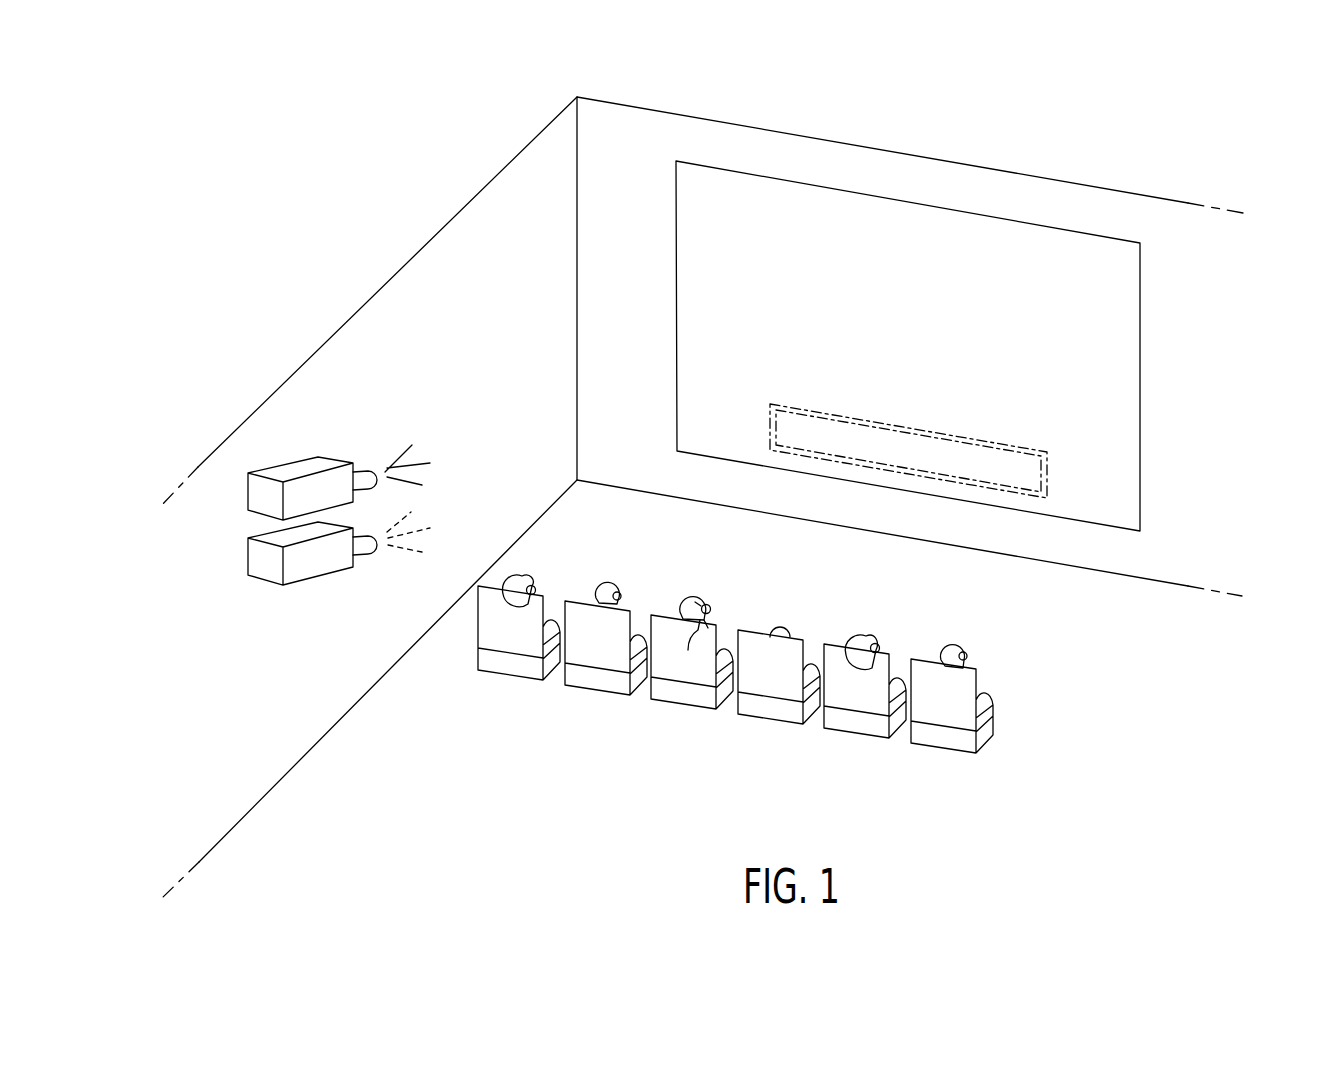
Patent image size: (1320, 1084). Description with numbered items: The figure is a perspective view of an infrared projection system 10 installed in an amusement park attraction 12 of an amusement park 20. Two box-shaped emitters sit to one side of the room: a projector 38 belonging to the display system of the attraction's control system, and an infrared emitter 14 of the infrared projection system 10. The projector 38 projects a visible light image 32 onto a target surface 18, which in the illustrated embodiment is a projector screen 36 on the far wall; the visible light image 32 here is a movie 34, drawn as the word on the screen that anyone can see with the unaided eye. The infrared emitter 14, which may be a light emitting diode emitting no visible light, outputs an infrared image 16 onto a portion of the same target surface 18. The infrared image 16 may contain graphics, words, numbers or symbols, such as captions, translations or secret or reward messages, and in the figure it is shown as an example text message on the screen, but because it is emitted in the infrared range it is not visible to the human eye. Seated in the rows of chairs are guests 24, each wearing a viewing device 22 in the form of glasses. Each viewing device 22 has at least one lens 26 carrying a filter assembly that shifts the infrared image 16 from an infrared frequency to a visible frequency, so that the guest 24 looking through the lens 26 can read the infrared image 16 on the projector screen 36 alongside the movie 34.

The infrared projection system 10 is at (295, 520).
The amusement park attraction 12 is at (1110, 675).
The infrared emitter 14 is at (363, 543).
The infrared image 16 is at (963, 439).
The target surface 18 is at (1068, 470).
The amusement park 20 is at (994, 133).
The viewing device 22 is at (688, 608).
The guest 24 is at (688, 602).
The lens 26 is at (712, 606).
The visible light image 32 is at (953, 313).
The movie 34 is at (931, 296).
The projector screen 36 is at (840, 362).
The projector 38 is at (308, 478).